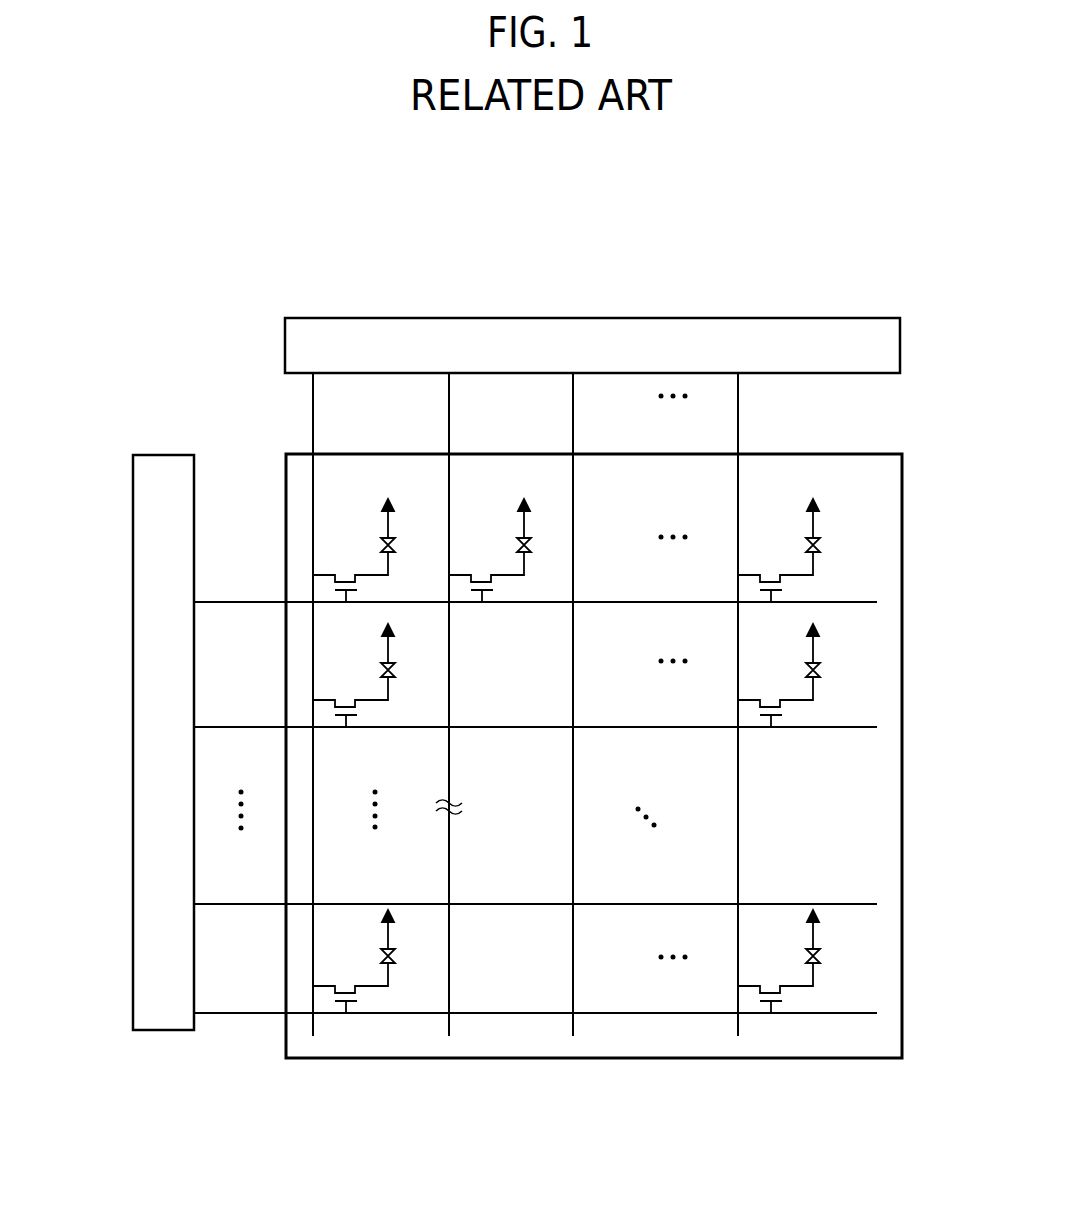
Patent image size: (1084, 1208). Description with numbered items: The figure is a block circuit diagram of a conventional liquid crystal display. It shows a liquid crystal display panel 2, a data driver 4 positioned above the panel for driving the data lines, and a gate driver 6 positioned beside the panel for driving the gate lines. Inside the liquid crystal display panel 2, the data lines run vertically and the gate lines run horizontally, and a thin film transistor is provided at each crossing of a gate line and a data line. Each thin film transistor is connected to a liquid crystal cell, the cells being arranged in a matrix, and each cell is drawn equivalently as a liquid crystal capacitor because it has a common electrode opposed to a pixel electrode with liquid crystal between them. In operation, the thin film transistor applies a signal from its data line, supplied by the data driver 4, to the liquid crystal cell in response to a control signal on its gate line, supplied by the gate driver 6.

The liquid crystal display panel 2 is at (903, 857).
The data driver 4 is at (553, 318).
The gate driver 6 is at (133, 880).